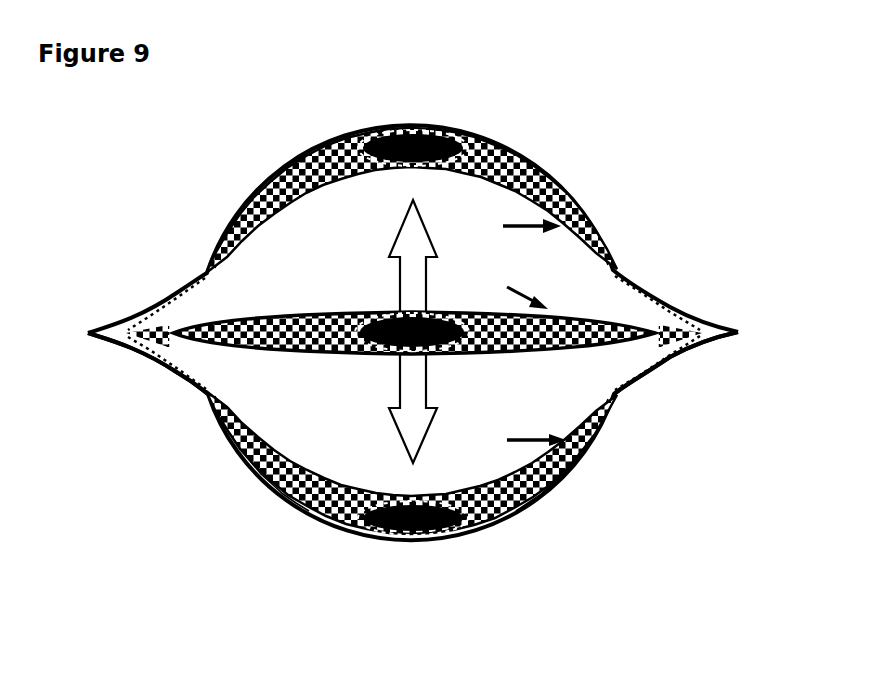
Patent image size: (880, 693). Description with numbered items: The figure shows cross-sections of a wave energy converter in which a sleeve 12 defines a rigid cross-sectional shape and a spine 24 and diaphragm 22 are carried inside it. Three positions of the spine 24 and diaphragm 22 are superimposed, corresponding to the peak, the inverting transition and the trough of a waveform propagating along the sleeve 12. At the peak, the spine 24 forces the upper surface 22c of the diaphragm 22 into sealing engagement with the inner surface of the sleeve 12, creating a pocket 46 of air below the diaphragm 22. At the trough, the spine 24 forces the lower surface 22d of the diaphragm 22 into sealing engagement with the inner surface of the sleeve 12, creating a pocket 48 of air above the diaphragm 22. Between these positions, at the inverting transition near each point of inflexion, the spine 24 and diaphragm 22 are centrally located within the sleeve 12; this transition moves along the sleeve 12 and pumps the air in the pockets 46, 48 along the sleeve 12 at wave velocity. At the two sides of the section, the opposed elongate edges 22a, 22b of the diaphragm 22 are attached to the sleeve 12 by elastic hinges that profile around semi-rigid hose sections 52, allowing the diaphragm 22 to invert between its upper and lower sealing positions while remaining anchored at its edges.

The sleeve 12 is at (352, 124).
The diaphragm 22 is at (557, 173).
The elongate edge of the diaphragm 22a is at (168, 347).
The elongate edge of the diaphragm 22b is at (660, 357).
The upper surface of the diaphragm 22c is at (502, 128).
The lower surface of the diaphragm 22d is at (331, 526).
The spine 24 is at (410, 134).
The pocket of air 46 is at (504, 402).
The pocket of air 48 is at (488, 224).
The semi-rigid hose section 52 is at (100, 333).